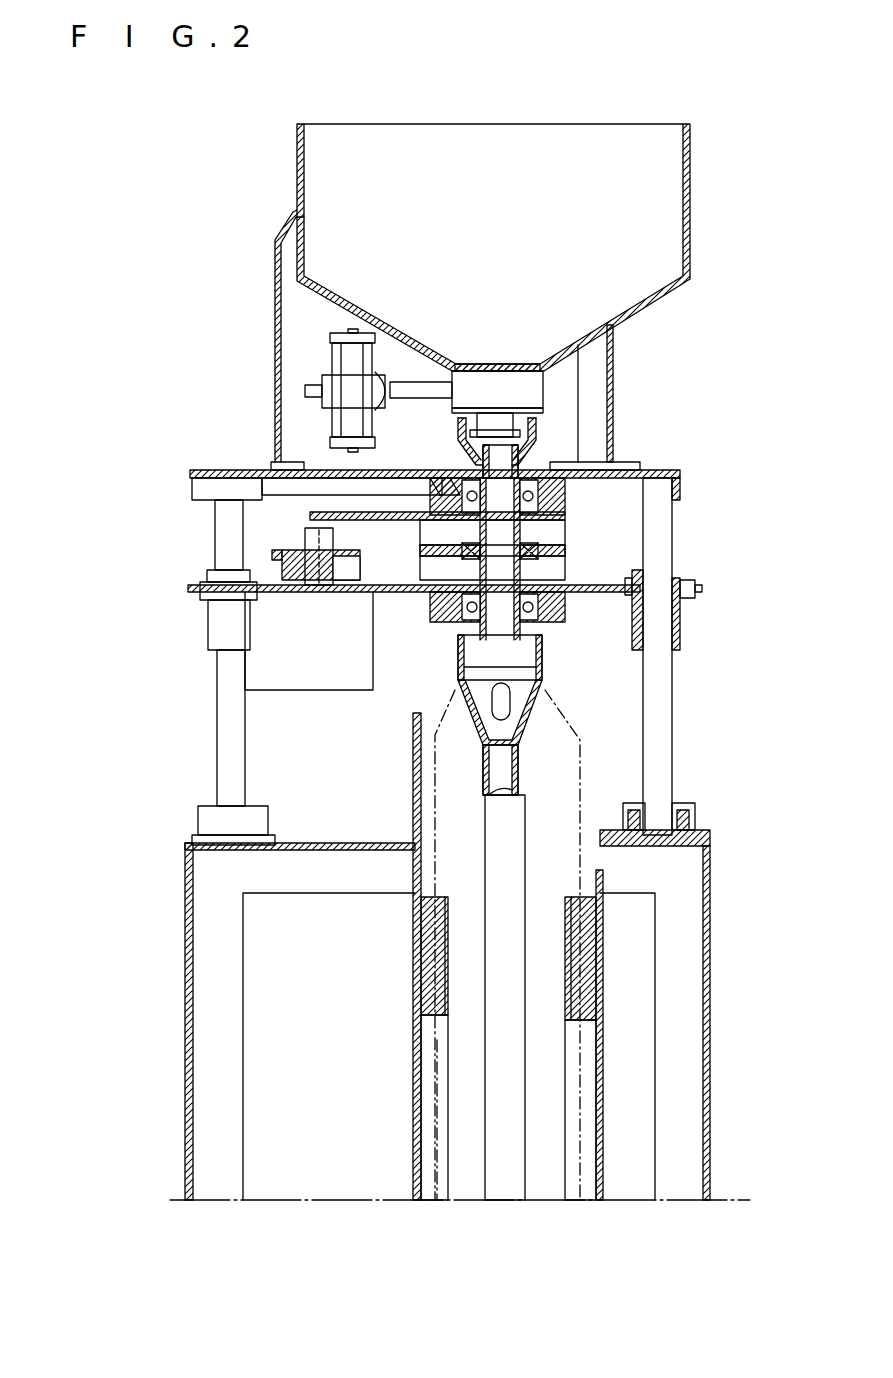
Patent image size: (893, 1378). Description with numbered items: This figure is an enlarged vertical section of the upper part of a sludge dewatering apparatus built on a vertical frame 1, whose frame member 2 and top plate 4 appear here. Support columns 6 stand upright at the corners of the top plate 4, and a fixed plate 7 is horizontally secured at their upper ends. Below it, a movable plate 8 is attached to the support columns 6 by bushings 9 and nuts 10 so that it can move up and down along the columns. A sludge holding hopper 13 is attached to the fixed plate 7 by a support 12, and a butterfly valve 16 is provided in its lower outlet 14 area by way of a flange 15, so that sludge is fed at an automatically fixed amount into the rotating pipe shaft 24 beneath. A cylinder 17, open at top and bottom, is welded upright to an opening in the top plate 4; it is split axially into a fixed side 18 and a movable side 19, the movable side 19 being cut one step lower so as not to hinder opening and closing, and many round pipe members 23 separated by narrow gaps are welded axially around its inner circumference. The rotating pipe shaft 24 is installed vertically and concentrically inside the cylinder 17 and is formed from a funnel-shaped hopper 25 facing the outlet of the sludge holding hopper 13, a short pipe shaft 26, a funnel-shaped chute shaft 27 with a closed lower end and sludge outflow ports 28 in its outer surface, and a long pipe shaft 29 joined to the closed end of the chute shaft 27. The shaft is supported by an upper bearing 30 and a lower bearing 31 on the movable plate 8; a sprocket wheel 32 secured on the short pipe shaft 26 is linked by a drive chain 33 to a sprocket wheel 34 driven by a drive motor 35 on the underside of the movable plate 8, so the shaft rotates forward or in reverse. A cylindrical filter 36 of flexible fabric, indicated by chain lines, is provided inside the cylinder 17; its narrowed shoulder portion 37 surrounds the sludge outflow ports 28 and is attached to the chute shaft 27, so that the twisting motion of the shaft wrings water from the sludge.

The vertical frame 1 is at (710, 1067).
The frame member 2 is at (195, 1030).
The top plate 4 is at (330, 845).
The support column 6 is at (215, 548).
The fixed plate 7 is at (213, 470).
The movable plate 8 is at (600, 575).
The bushing 9 is at (680, 640).
The nut 10 is at (695, 585).
The support 12 is at (283, 305).
The sludge holding hopper 13 is at (690, 190).
The lower outlet 14 is at (528, 425).
The flange 15 is at (540, 412).
The butterfly valve 16 is at (530, 385).
The cylinder 17 is at (415, 1155).
The fixed side 18 is at (413, 745).
The movable side 19 is at (605, 1158).
The round pipe member 23 is at (415, 963).
The rotating pipe shaft 24 is at (600, 865).
The hopper 25 is at (355, 437).
The short pipe shaft 26 is at (498, 467).
The chute shaft 27 is at (542, 645).
The sludge outflow port 28 is at (505, 690).
The long pipe shaft 29 is at (500, 1078).
The bearing 30 is at (560, 500).
The bearing 31 is at (565, 612).
The sprocket wheel 32 is at (565, 540).
The drive chain 33 is at (308, 537).
The sprocket wheel 34 is at (275, 555).
The drive motor 35 is at (265, 672).
The cylindrical filter 36 is at (437, 1040).
The shoulder portion 37 is at (600, 737).